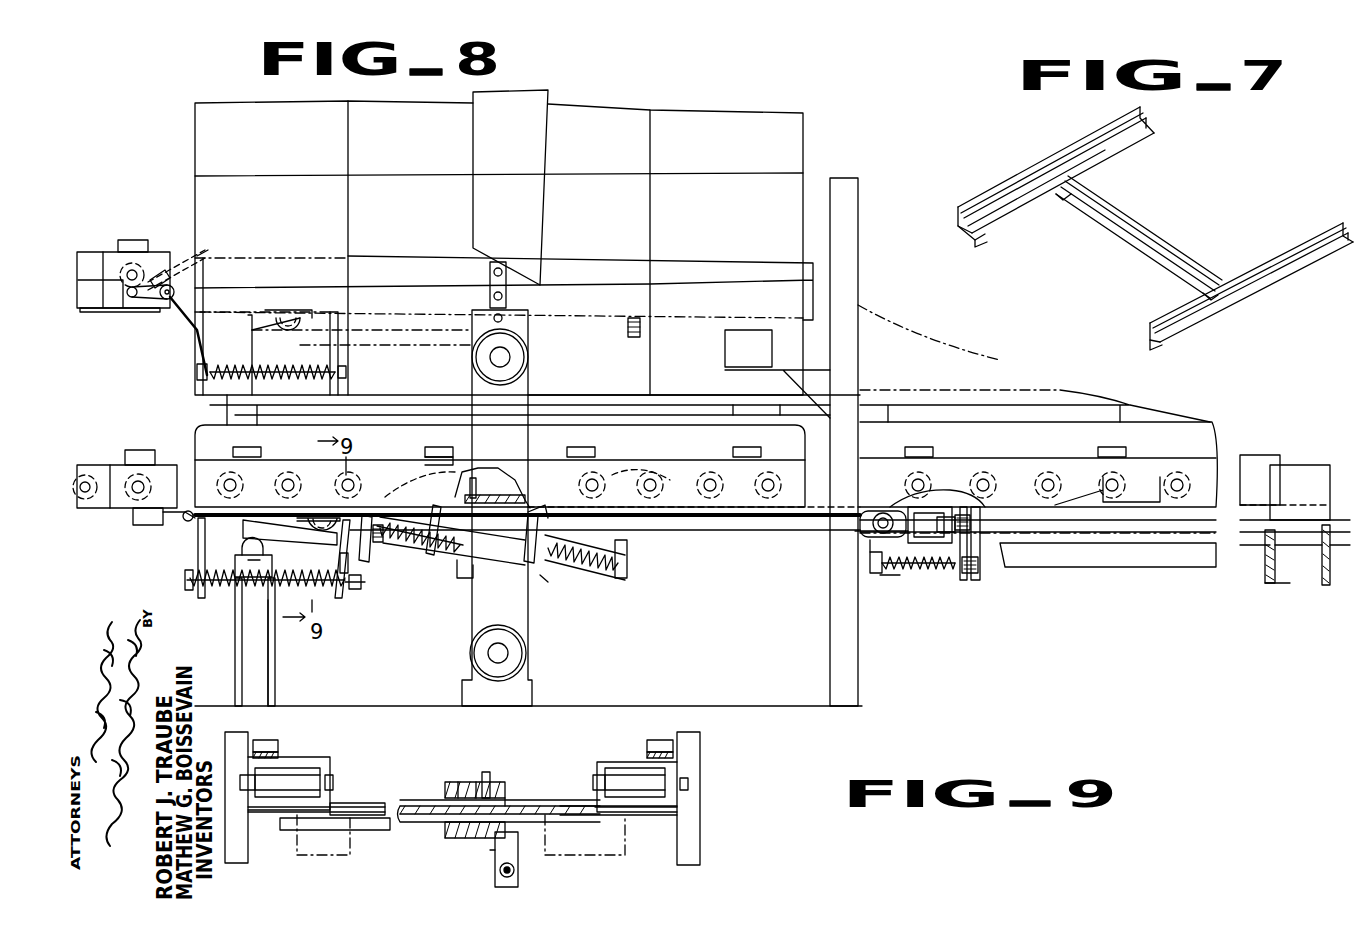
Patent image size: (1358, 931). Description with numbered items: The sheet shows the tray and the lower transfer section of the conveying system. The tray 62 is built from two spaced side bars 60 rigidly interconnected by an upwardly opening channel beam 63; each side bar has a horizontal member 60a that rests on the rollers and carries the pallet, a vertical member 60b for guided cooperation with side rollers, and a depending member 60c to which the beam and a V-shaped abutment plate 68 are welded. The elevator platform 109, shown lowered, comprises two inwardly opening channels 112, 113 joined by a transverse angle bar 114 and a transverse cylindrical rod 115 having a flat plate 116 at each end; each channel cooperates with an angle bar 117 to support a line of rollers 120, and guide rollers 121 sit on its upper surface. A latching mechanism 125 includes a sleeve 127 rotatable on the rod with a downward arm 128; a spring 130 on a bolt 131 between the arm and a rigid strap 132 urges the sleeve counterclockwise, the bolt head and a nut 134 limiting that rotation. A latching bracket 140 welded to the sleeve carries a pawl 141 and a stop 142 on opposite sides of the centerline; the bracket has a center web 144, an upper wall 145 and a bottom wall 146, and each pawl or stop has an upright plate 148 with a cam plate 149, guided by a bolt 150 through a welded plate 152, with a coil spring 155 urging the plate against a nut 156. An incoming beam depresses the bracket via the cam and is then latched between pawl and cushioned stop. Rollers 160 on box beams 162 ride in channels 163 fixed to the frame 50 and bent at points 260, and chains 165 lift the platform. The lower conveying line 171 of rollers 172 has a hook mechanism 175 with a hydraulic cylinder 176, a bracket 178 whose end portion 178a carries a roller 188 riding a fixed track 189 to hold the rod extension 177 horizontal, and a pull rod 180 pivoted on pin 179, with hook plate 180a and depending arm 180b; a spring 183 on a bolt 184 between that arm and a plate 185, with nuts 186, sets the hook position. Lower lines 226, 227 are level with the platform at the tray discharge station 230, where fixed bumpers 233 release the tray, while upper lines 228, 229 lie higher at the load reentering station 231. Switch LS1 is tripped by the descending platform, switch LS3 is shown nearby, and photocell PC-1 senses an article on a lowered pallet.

In FIG. 8, the frame 50 is at (860, 281).
In FIG. 7, the side bars 60 is at (1140, 110).
In FIG. 7, the horizontal member 60a is at (960, 226).
In FIG. 7, the vertical member 60b is at (995, 188).
In FIG. 7, the depending member 60c is at (993, 238).
In FIG. 7, the tray 62 is at (1220, 164).
In FIG. 8, the channel beam 63 is at (482, 495).
In FIG. 7, the channel beam 63 is at (1152, 228).
In FIG. 7, the V-shaped abutment plate 68 is at (1080, 215).
In FIG. 8, the platform 109 is at (664, 266).
In FIG. 8, the channel 112 is at (305, 465).
In FIG. 9, the channel 112 is at (680, 765).
In FIG. 9, the channel 113 is at (278, 758).
In FIG. 8, the transverse angle bar 114 is at (198, 558).
In FIG. 9, the transverse angle bar 114 is at (315, 857).
In FIG. 8, the transverse cylindrical rod 115 is at (325, 540).
In FIG. 9, the transverse cylindrical rod 115 is at (395, 830).
In FIG. 9, the flat plate 116 is at (280, 814).
In FIG. 8, the angle bar 117 is at (440, 470).
In FIG. 9, the angle bar 117 is at (332, 790).
In FIG. 8, the rollers 120 is at (610, 470).
In FIG. 9, the rollers 120 is at (300, 768).
In FIG. 8, the guide rollers 121 is at (245, 449).
In FIG. 9, the guide rollers 121 is at (262, 740).
In FIG. 8, the latching mechanism 125 is at (632, 338).
In FIG. 9, the latching mechanism 125 is at (440, 784).
In FIG. 8, the sleeve 127 is at (280, 519).
In FIG. 9, the sleeve 127 is at (510, 800).
In FIG. 8, the arm 128 is at (345, 598).
In FIG. 9, the arm 128 is at (518, 858).
In FIG. 8, the spring 130 is at (338, 600).
In FIG. 9, the spring 130 is at (495, 862).
In FIG. 8, the bolt 131 is at (245, 600).
In FIG. 9, the bolt 131 is at (514, 872).
In FIG. 8, the rigid strap 132 is at (200, 592).
In FIG. 8, the nut 134 is at (190, 580).
In FIG. 8, the latching bracket 140 is at (334, 504).
In FIG. 8, the pawl 141 is at (552, 494).
In FIG. 8, the stop 142 is at (440, 512).
In FIG. 9, the stop 142 is at (487, 772).
In FIG. 8, the center web 144 is at (432, 552).
In FIG. 8, the spring 145 is at (628, 560).
In FIG. 9, the spring 145 is at (463, 782).
In FIG. 8, the bottom wall 146 is at (543, 584).
In FIG. 9, the bottom wall 146 is at (472, 840).
In FIG. 8, the upright plate 148 is at (473, 578).
In FIG. 8, the cam plate 149 is at (405, 488).
In FIG. 8, the bolt 150 is at (428, 565).
In FIG. 8, the plate 152 is at (390, 545).
In FIG. 8, the coil spring 155 is at (395, 552).
In FIG. 8, the nut 156 is at (524, 545).
In FIG. 8, the rollers 160 is at (528, 357).
In FIG. 8, the box beam 162 is at (525, 388).
In FIG. 9, the box beam 162 is at (240, 864).
In FIG. 8, the channel 163 is at (548, 97).
In FIG. 8, the chain 165 is at (490, 275).
In FIG. 8, the line of rollers 171 is at (1212, 470).
In FIG. 8, the rollers 172 is at (992, 468).
In FIG. 8, the hook mechanism 175 is at (978, 580).
In FIG. 8, the hydraulic power cylinder 176 is at (1340, 576).
In FIG. 8, the rod extension 177 is at (1145, 530).
In FIG. 8, the bracket 178 is at (952, 484).
In FIG. 8, the end portion 178a is at (885, 511).
In FIG. 8, the pivot pin 179 is at (860, 520).
In FIG. 8, the pull rod 180 is at (720, 525).
In FIG. 8, the plate 180a is at (492, 454).
In FIG. 8, the depending arm 180b is at (860, 578).
In FIG. 8, the spring 183 is at (885, 574).
In FIG. 8, the bolt 184 is at (910, 574).
In FIG. 8, the plate 185 is at (980, 548).
In FIG. 8, the nuts 186 is at (980, 568).
In FIG. 8, the roller 188 is at (926, 543).
In FIG. 8, the fixed track 189 is at (860, 548).
In FIG. 8, the lower line of rollers 226 is at (95, 465).
In FIG. 8, the lower line of rollers 227 is at (135, 515).
In FIG. 8, the upper line of rollers 228 is at (90, 252).
In FIG. 8, the upper line of rollers 229 is at (165, 258).
In FIG. 8, the tray discharge station 230 is at (180, 450).
In FIG. 8, the load reentering station 231 is at (195, 252).
In FIG. 8, the fixed bumpers 233 is at (270, 657).
In FIG. 8, the bend 260 is at (473, 158).
In FIG. 8, the switch LS-1 LS1 is at (165, 530).
In FIG. 8, the limit switch LS3 is at (103, 308).
In FIG. 8, the photocell PC-1 is at (725, 338).